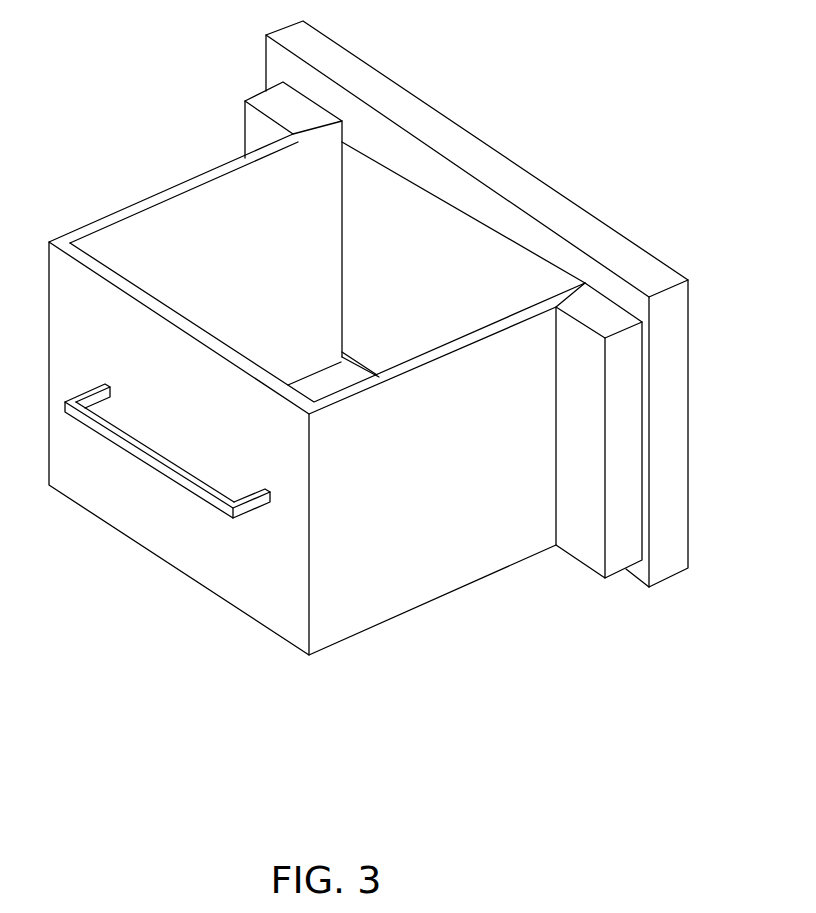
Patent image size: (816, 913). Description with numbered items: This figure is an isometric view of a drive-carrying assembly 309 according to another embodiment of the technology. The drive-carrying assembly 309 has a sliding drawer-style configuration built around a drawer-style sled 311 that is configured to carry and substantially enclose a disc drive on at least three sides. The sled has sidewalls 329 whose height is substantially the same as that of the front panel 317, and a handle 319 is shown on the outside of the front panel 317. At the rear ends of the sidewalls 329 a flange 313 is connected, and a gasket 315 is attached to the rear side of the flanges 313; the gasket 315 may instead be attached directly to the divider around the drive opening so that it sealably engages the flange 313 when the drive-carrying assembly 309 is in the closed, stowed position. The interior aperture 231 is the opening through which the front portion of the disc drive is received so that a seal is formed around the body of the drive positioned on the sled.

The interior aperture 231 is at (389, 257).
The drive-carrying assembly 309 is at (467, 304).
The drawer-style sled 311 is at (307, 413).
The flange 313 is at (263, 101).
The gasket 315 is at (648, 267).
The front panel 317 is at (228, 583).
The handle 319 is at (148, 460).
The sidewalls 329 is at (163, 212).